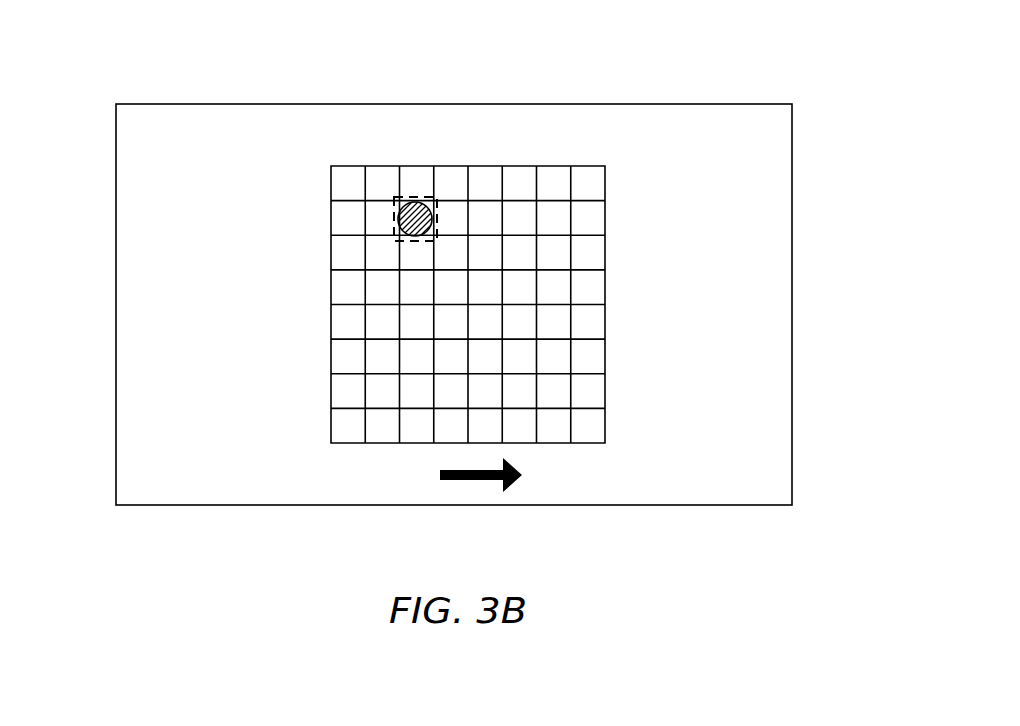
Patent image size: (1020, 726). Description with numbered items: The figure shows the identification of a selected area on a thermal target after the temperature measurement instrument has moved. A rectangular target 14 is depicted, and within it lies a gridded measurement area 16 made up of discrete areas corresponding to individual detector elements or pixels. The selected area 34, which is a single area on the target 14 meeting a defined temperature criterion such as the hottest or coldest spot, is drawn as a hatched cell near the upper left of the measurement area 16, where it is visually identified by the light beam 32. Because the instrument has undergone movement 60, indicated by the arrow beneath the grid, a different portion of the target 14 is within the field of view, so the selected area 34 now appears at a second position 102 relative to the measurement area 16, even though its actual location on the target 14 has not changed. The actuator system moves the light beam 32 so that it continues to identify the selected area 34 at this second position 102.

The target 14 is at (790, 190).
The measurement area 16 is at (323, 232).
The selected area 34 is at (407, 197).
The light beam 32 is at (428, 218).
The second position 102 is at (452, 195).
The movement 60 is at (488, 480).